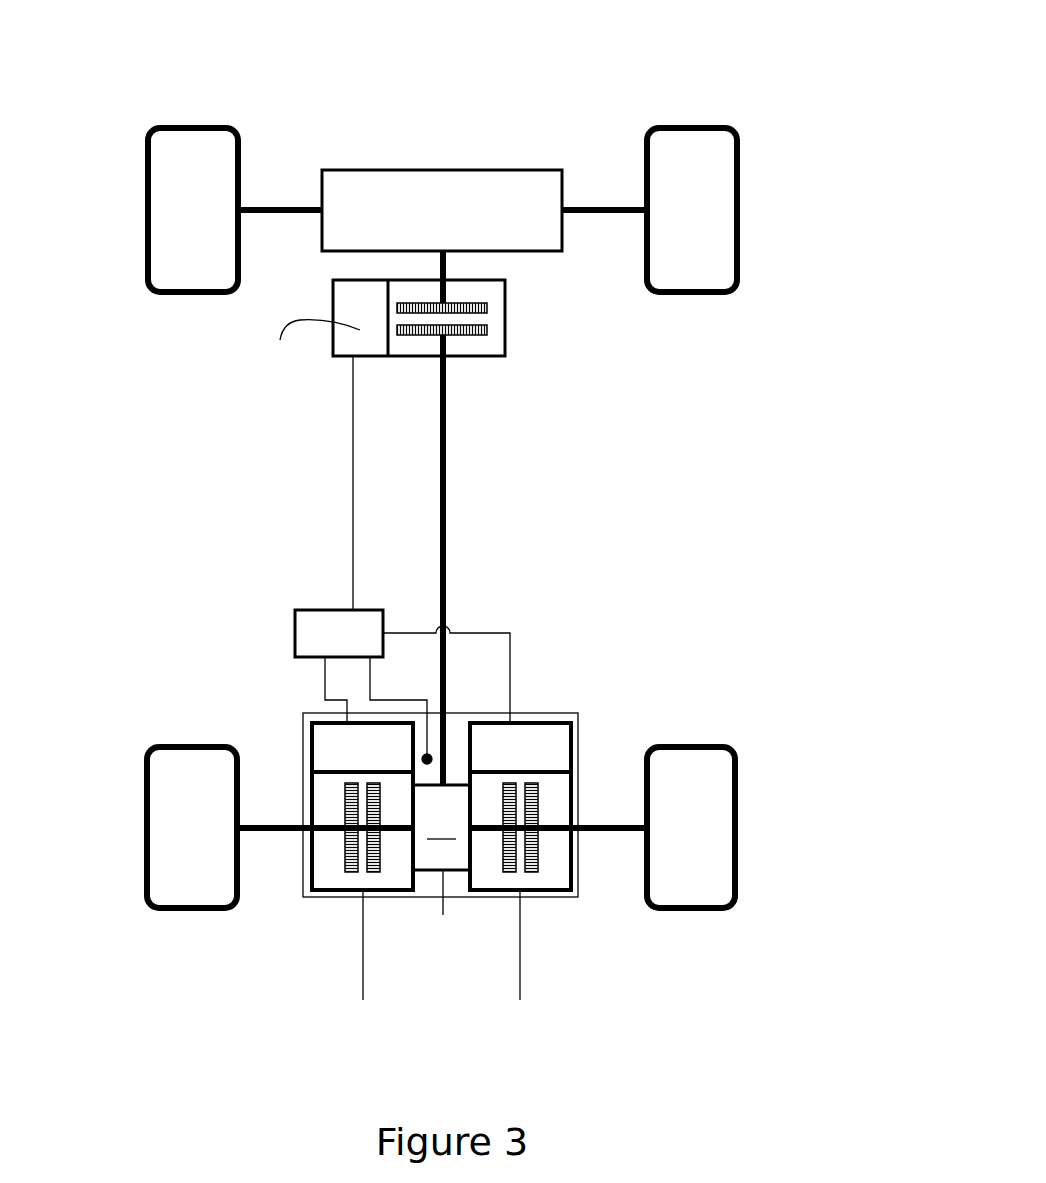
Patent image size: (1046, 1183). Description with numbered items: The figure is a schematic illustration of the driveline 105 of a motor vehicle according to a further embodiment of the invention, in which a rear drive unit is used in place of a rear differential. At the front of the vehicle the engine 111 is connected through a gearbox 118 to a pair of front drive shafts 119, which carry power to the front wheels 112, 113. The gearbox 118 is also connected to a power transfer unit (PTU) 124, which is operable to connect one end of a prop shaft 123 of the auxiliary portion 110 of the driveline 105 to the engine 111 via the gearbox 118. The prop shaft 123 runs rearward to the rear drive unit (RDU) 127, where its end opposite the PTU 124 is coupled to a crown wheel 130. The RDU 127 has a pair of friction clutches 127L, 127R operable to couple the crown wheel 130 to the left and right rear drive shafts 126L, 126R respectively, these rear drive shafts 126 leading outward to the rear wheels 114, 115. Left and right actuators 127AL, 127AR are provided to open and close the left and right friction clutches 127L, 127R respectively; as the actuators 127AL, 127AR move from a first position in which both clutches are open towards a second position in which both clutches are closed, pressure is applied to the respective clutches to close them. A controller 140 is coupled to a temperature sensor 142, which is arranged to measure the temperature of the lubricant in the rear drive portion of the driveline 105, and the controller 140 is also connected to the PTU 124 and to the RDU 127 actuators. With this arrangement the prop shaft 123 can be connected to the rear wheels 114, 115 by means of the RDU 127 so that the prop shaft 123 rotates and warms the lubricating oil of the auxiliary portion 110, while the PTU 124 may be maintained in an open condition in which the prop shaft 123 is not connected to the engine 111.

The driveline 105 is at (778, 106).
The engine 111 is at (442, 160).
The gearbox 118 is at (377, 180).
The front drive shafts 119 is at (263, 205).
The front wheel 112 is at (148, 268).
The front wheel 113 is at (740, 268).
The rear wheel 114 is at (147, 875).
The rear wheel 115 is at (735, 873).
The power transfer unit (PTU) 124 is at (505, 297).
The auxiliary portion 110 is at (392, 538).
The prop shaft 123 is at (446, 458).
The controller 140 is at (320, 610).
The temperature sensor 142 is at (427, 755).
The rear drive unit (RDU) 127 is at (528, 713).
The left friction clutch 127L is at (311, 831).
The right friction clutch 127R is at (559, 814).
The left actuator 127AL is at (325, 732).
The right actuator 127AR is at (538, 730).
The crown wheel 130 is at (442, 873).
The rear drive shafts 126 is at (491, 814).
The left rear drive shaft 126L is at (265, 833).
The right rear drive shaft 126R is at (605, 823).